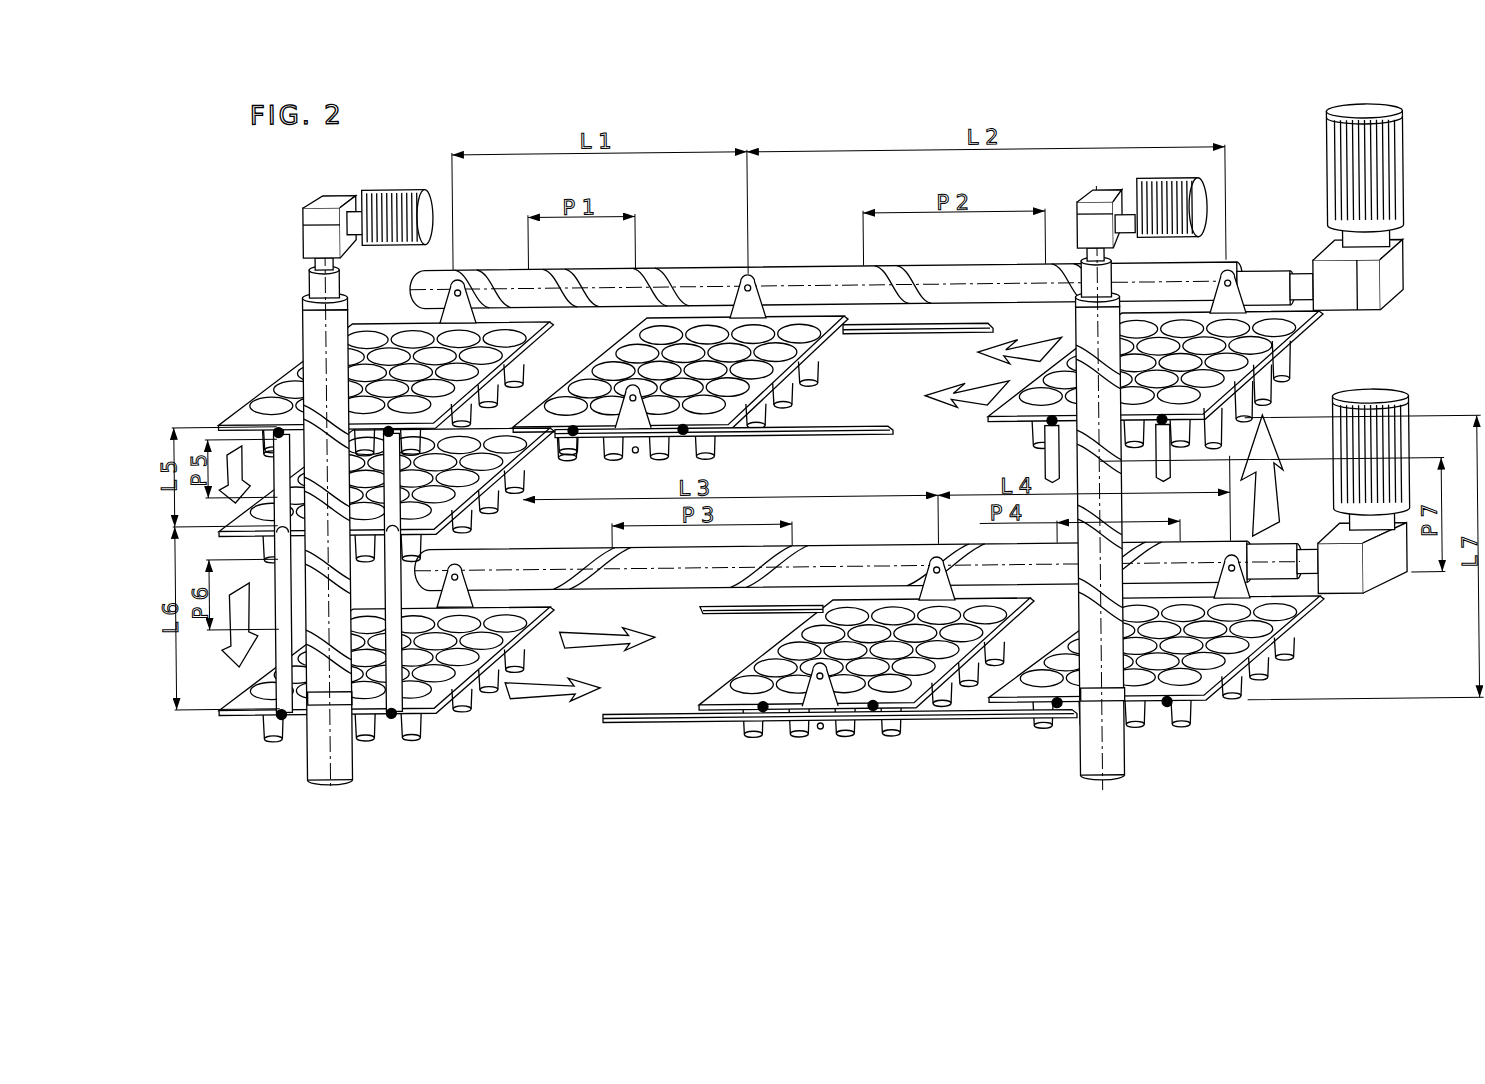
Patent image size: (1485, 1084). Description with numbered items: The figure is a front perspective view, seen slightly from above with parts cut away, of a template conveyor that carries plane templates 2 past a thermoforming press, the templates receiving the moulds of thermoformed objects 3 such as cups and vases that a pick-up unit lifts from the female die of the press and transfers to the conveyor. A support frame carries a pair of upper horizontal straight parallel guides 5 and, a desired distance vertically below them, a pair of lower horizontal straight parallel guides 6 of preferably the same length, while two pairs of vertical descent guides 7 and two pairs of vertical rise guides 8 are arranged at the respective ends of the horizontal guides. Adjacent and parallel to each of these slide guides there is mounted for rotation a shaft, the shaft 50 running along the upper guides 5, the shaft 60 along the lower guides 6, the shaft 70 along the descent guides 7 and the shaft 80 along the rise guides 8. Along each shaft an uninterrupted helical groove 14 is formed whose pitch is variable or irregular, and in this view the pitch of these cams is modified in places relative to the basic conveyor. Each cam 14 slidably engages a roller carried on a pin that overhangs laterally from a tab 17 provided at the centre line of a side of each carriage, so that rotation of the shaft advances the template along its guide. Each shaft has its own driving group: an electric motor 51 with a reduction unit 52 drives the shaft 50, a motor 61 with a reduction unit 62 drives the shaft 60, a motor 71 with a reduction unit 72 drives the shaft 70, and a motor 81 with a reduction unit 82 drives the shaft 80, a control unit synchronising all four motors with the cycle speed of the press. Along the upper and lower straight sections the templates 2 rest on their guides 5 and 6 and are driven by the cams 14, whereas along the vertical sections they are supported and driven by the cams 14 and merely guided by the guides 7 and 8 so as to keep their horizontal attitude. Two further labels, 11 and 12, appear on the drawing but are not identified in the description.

The plane templates 2 is at (539, 344).
The thermoformed objects 3 is at (1293, 372).
The upper horizontal straight parallel guides 5 is at (860, 430).
The lower horizontal straight parallel guides 6 is at (688, 707).
The vertical descent guides 7 is at (393, 603).
The vertical rise guides 8 is at (1052, 466).
The tray plate 11 is at (292, 373).
The cup 12 is at (262, 410).
The helical groove 14 is at (668, 282).
The tab 17 is at (455, 310).
The shaft 50 is at (1260, 270).
The electric motor 51 is at (1390, 152).
The reduction unit 52 is at (1390, 272).
The shaft 60 is at (863, 557).
The electric motor 61 is at (1383, 392).
The reduction unit 62 is at (1380, 588).
The shaft 70 is at (325, 772).
The electric motor 71 is at (394, 190).
The reduction unit 72 is at (318, 217).
The shaft 80 is at (1093, 752).
The electric motor 81 is at (1205, 208).
The reduction unit 82 is at (1107, 197).